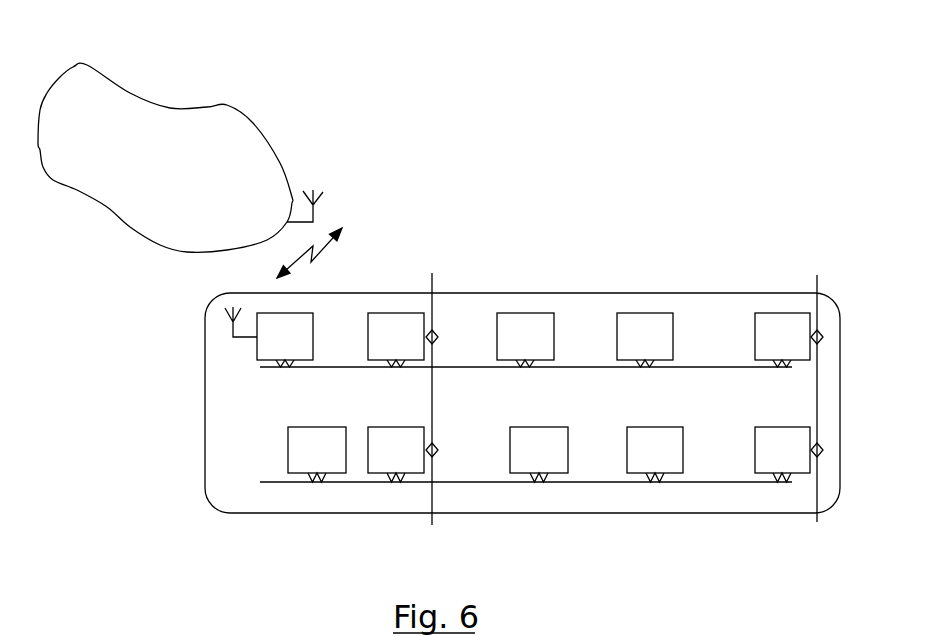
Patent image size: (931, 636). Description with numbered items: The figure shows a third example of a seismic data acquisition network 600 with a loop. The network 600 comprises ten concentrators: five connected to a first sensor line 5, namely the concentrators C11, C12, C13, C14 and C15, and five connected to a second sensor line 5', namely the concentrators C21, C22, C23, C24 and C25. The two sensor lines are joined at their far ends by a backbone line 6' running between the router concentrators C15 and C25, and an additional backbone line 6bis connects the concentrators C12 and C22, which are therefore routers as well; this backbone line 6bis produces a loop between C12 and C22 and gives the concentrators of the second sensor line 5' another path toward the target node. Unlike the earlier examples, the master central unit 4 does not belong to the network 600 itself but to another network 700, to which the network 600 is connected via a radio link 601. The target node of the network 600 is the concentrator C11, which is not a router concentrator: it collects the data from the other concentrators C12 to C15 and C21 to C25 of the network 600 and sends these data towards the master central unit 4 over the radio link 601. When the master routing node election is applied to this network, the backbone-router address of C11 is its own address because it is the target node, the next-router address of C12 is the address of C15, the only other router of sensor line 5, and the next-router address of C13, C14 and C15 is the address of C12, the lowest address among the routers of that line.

The master central unit 4 is at (75, 65).
The another network 700 is at (223, 107).
The radio link 601 is at (314, 257).
The network 600 is at (743, 293).
The first sensor line 5 is at (526, 294).
The second sensor line 5' is at (526, 533).
The backbone line 6bis is at (432, 497).
The backbone line 6' is at (822, 430).
The concentrator C11 is at (285, 340).
The concentrator C12 is at (396, 340).
The concentrator C13 is at (525, 340).
The concentrator C14 is at (645, 340).
The concentrator C15 is at (782, 340).
The concentrator C21 is at (317, 454).
The concentrator C22 is at (396, 454).
The concentrator C23 is at (539, 454).
The concentrator C24 is at (655, 454).
The concentrator C25 is at (782, 454).